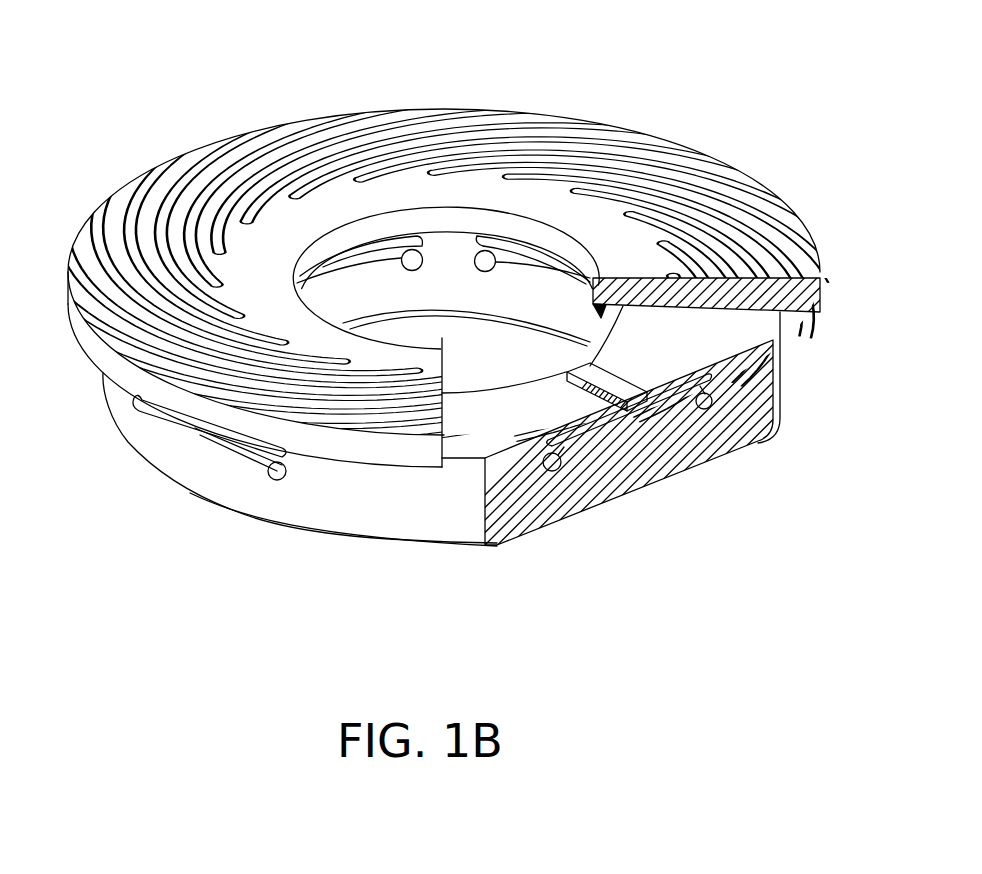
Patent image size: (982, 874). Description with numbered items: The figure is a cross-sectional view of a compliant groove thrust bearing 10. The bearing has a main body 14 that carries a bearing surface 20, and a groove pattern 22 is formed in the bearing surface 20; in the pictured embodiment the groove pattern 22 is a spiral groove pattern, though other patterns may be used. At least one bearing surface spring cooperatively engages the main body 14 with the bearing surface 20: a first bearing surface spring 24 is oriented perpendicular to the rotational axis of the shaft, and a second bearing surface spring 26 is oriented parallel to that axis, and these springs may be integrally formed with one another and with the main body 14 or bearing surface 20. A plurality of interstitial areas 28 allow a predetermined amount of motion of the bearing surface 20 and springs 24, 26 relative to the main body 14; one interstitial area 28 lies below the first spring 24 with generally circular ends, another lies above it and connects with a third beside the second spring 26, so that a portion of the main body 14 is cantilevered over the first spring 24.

The groove thrust bearing 10 is at (491, 353).
The main body 14 is at (391, 503).
The bearing surface 20 is at (455, 236).
The groove pattern 22 is at (235, 143).
The first bearing surface spring 24 is at (222, 435).
The second bearing surface spring 26 is at (570, 374).
The interstitial area 28 is at (277, 476).